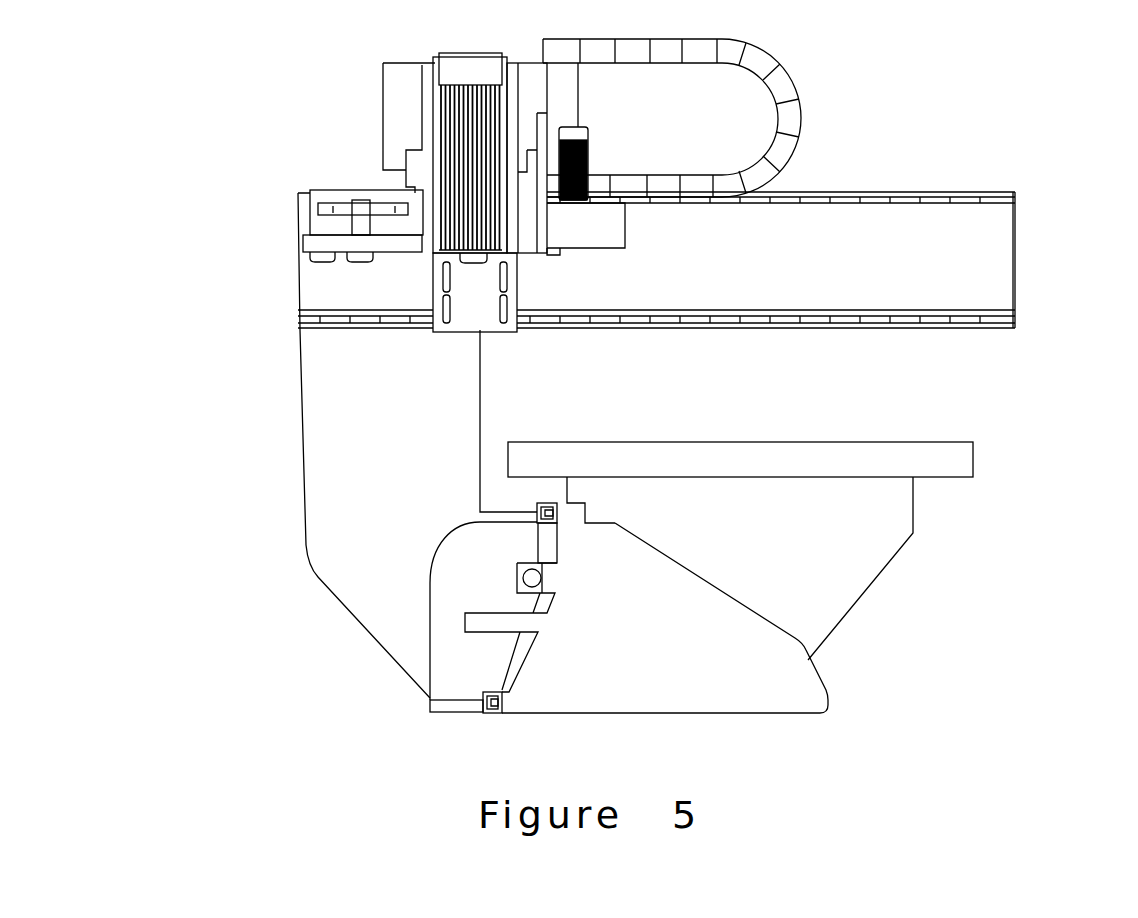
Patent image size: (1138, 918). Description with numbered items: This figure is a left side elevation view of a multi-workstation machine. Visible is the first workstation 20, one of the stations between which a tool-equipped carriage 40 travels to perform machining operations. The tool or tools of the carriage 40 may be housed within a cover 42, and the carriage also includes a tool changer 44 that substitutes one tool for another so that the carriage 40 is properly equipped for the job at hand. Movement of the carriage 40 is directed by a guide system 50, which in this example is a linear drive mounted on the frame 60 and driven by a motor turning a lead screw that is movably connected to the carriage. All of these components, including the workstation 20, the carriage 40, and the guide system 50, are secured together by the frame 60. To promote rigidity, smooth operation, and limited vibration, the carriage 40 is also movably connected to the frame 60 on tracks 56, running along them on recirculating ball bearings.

The first workstation 20 is at (772, 442).
The carriage 40 is at (866, 186).
The cover 42 is at (1017, 247).
The tool changer 44 is at (300, 234).
The guide system 50 is at (512, 577).
The track 56 is at (503, 708).
The frame 60 is at (830, 695).